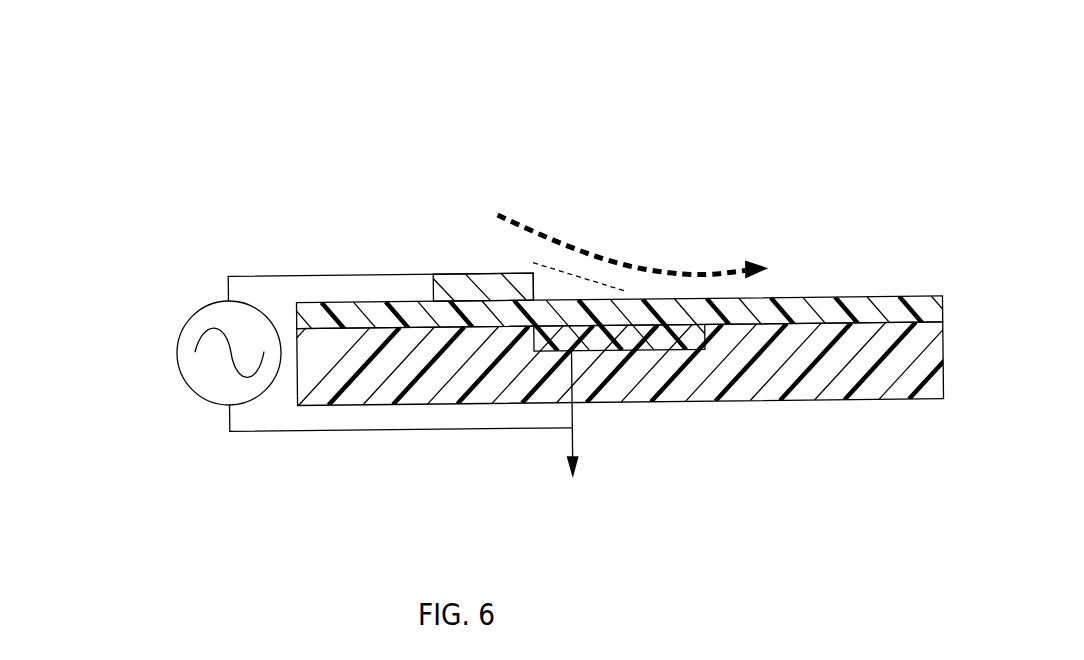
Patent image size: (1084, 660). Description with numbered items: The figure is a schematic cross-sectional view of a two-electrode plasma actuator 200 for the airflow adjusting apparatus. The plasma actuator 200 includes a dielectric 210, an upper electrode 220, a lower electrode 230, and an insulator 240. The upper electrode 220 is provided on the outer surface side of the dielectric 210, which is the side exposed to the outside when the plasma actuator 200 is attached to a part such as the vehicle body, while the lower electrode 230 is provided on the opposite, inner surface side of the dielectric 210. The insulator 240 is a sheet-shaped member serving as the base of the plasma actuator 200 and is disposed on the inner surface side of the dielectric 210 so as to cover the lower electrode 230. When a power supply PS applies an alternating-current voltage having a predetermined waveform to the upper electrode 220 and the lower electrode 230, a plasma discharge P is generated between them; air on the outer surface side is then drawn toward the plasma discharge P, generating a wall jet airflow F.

The plasma actuator 200 is at (625, 291).
The dielectric 210 is at (833, 299).
The upper electrode 220 is at (478, 272).
The lower electrode 230 is at (647, 348).
The insulator 240 is at (776, 402).
The power supply PS is at (192, 312).
The plasma discharge P is at (575, 257).
The wall jet airflow F is at (686, 261).